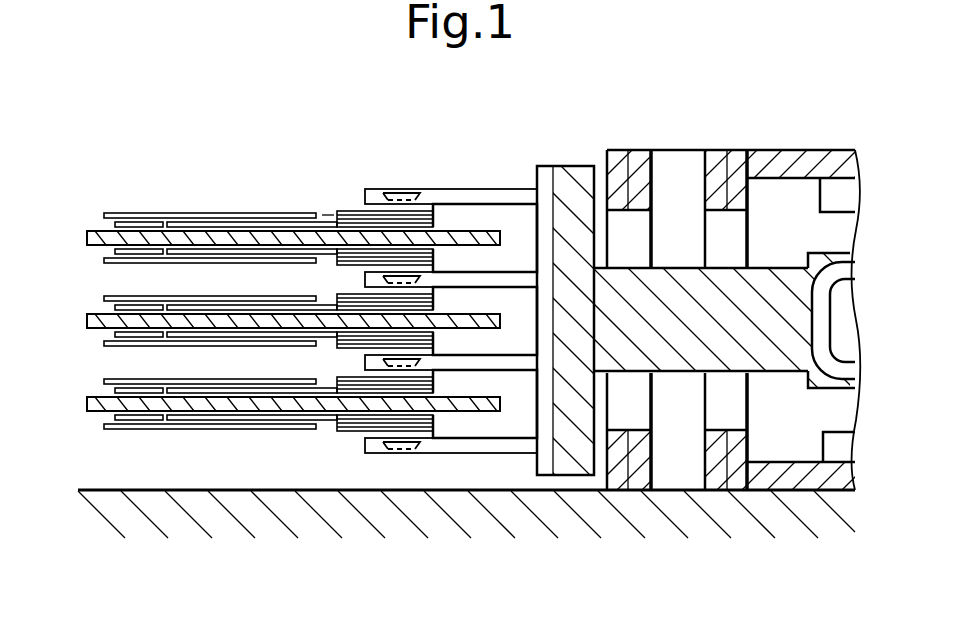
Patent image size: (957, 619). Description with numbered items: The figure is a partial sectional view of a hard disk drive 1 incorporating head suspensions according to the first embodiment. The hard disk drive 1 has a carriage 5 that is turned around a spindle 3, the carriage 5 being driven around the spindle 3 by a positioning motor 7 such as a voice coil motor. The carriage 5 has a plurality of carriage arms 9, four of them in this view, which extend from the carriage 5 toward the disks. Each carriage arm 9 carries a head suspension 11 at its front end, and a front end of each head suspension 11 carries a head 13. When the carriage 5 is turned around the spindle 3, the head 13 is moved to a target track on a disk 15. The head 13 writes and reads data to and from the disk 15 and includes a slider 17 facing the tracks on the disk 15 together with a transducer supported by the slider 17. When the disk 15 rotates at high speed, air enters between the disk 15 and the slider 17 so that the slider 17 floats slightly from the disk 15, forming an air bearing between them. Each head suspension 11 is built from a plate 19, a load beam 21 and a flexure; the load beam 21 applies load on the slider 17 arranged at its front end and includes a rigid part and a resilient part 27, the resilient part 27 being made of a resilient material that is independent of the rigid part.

The hard disk drive 1 is at (718, 113).
The spindle 3 is at (680, 163).
The carriage 5 is at (573, 163).
The positioning motor 7 is at (834, 147).
The carriage arm 9 is at (513, 264).
The head suspension 11 is at (218, 290).
The head 13 is at (101, 252).
The disk 15 is at (457, 308).
The slider 17 is at (133, 220).
The plate 19 is at (356, 209).
The load beam 21 is at (197, 210).
The resilient part 27 is at (327, 213).